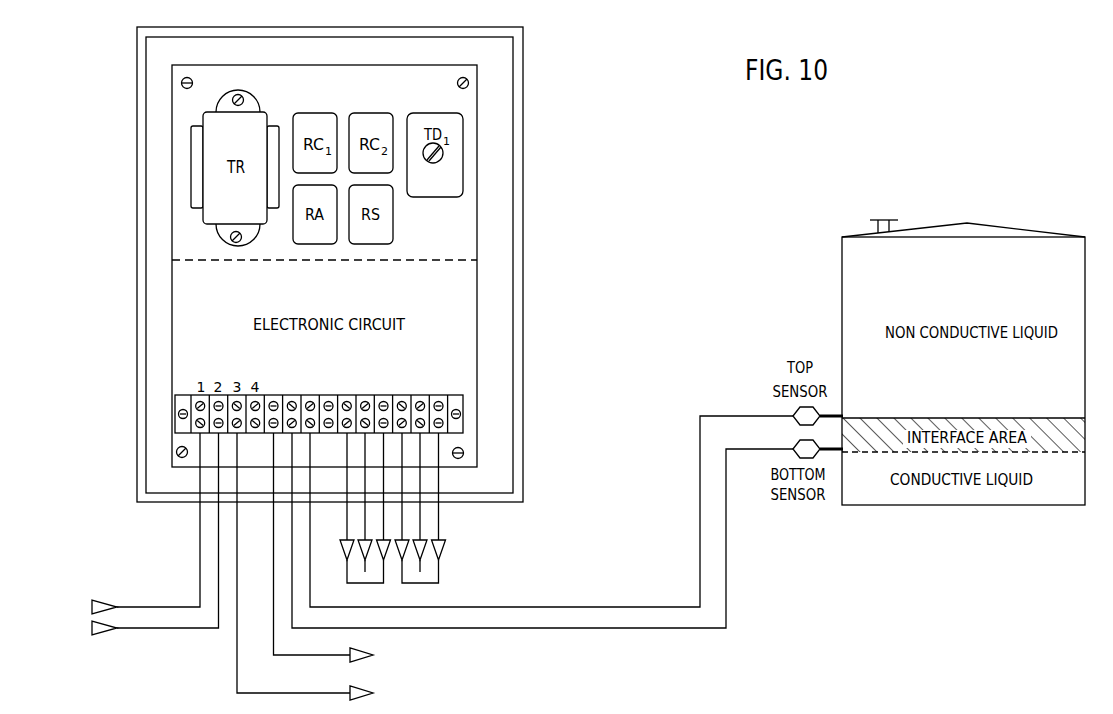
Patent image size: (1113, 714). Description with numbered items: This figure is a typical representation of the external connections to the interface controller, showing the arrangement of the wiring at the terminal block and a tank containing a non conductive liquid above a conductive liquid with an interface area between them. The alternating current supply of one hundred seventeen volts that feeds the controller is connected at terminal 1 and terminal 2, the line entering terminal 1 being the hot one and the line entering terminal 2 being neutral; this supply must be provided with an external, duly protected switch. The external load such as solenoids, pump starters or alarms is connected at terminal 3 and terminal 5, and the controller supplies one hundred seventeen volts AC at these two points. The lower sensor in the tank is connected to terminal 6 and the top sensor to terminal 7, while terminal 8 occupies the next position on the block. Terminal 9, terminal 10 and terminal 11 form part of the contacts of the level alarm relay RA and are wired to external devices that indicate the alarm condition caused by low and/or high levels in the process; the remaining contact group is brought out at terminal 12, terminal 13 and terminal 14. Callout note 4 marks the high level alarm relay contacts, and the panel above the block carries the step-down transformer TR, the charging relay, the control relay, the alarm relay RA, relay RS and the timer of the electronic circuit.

The terminal No. 1 (hot AC supply line / note 1) 1 is at (136, 534).
The terminal No. 2 (neutral AC supply line / note 2) 2 is at (325, 566).
The terminal No. 3 (external load output / low level alarm relay contacts) 3 is at (365, 516).
The high level alarm relay contacts (note 4) 4 is at (420, 516).
The terminal No. 5 (external load output) 5 is at (273, 387).
The terminal No. 6 (lower sensor terminal) 6 is at (292, 387).
The terminal No. 7 (top sensor terminal) 7 is at (310, 387).
The terminal No. 8 is at (329, 387).
The terminal No. 9 (alarm relay contact) 9 is at (347, 387).
The terminal No. 10 (alarm relay contact) 10 is at (366, 387).
The terminal No. 11 (alarm relay contact) 11 is at (383, 387).
The terminal No. 12 is at (402, 387).
The terminal No. 13 is at (420, 387).
The terminal No. 14 is at (439, 387).